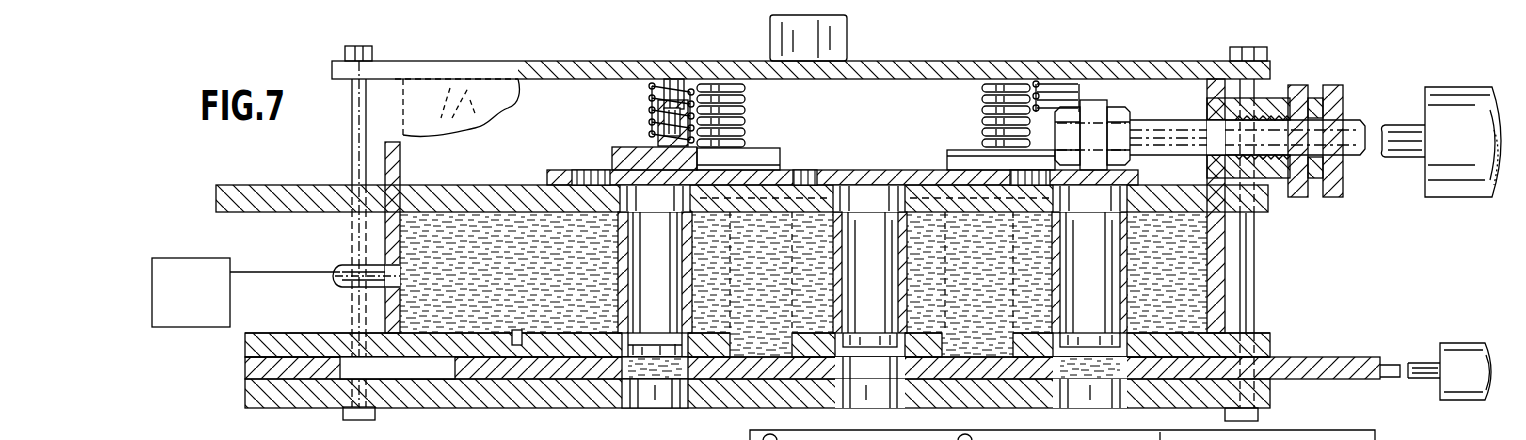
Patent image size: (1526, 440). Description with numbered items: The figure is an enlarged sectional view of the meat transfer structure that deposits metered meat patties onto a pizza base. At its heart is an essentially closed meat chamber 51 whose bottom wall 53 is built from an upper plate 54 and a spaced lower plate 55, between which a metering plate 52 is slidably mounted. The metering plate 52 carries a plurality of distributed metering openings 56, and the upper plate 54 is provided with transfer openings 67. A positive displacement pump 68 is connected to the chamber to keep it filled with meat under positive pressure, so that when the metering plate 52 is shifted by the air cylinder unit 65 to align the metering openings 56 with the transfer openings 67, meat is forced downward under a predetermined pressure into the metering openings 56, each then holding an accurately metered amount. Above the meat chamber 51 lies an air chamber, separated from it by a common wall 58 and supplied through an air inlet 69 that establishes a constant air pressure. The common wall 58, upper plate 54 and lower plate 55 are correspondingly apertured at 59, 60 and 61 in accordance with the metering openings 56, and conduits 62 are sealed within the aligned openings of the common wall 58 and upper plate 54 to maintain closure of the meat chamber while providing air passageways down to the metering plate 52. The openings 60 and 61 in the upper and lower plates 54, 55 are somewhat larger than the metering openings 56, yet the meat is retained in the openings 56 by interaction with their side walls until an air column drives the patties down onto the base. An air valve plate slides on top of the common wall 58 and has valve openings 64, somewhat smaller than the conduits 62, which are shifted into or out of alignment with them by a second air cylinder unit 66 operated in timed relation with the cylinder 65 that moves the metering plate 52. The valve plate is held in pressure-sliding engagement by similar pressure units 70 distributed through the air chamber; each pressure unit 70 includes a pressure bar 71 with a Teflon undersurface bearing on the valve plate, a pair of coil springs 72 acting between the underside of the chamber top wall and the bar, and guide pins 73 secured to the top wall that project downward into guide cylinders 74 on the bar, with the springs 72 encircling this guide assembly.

The meat chamber 51 is at (566, 121).
The metering plate 52 is at (520, 372).
The bottom wall 53 is at (797, 385).
The upper plate 54 is at (245, 337).
The lower plate 55 is at (300, 396).
The metering openings 56 is at (630, 408).
The common wall 58 is at (487, 146).
The apertures in common wall 59 is at (872, 310).
The openings in upper plate 60 is at (666, 334).
The openings in lower plate 61 is at (676, 400).
The conduits 62 is at (636, 272).
The valve openings 64 is at (586, 176).
The air cylinder unit 65 is at (1463, 358).
The air cylinder unit 66 is at (1473, 178).
The transfer openings 67 is at (511, 340).
The positive displacement pump 68 is at (192, 258).
The air inlet 69 is at (835, 42).
The pressure units 70 is at (754, 112).
The pressure bar 71 is at (787, 148).
The coil springs 72 is at (648, 97).
The guide pins 73 is at (673, 79).
The guide cylinders 74 is at (656, 139).